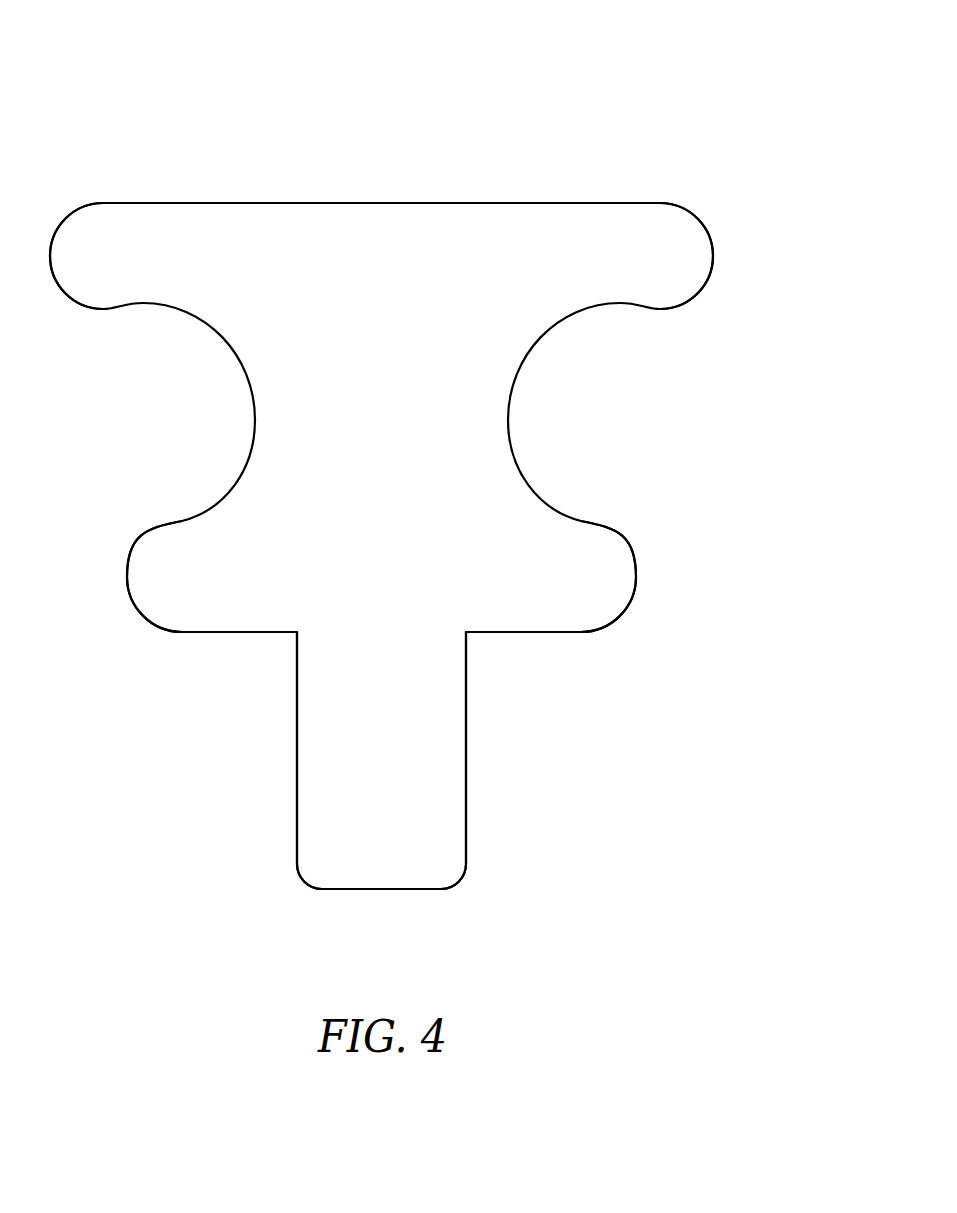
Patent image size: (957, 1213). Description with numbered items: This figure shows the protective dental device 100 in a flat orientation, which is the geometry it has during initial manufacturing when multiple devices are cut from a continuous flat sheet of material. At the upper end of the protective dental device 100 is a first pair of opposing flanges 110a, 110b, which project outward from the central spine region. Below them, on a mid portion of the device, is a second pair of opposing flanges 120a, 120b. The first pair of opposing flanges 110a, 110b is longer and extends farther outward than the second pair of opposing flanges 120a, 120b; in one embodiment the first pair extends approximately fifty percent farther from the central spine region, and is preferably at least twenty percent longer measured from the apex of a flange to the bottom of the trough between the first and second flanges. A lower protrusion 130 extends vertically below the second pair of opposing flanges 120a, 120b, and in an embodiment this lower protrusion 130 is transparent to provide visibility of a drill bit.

The protective dental device 100 is at (392, 125).
The first opposing flange 110a is at (89, 260).
The first opposing flange 110b is at (678, 255).
The second opposing flange 120a is at (169, 573).
The second opposing flange 120b is at (620, 588).
The lower protrusion 130 is at (383, 868).